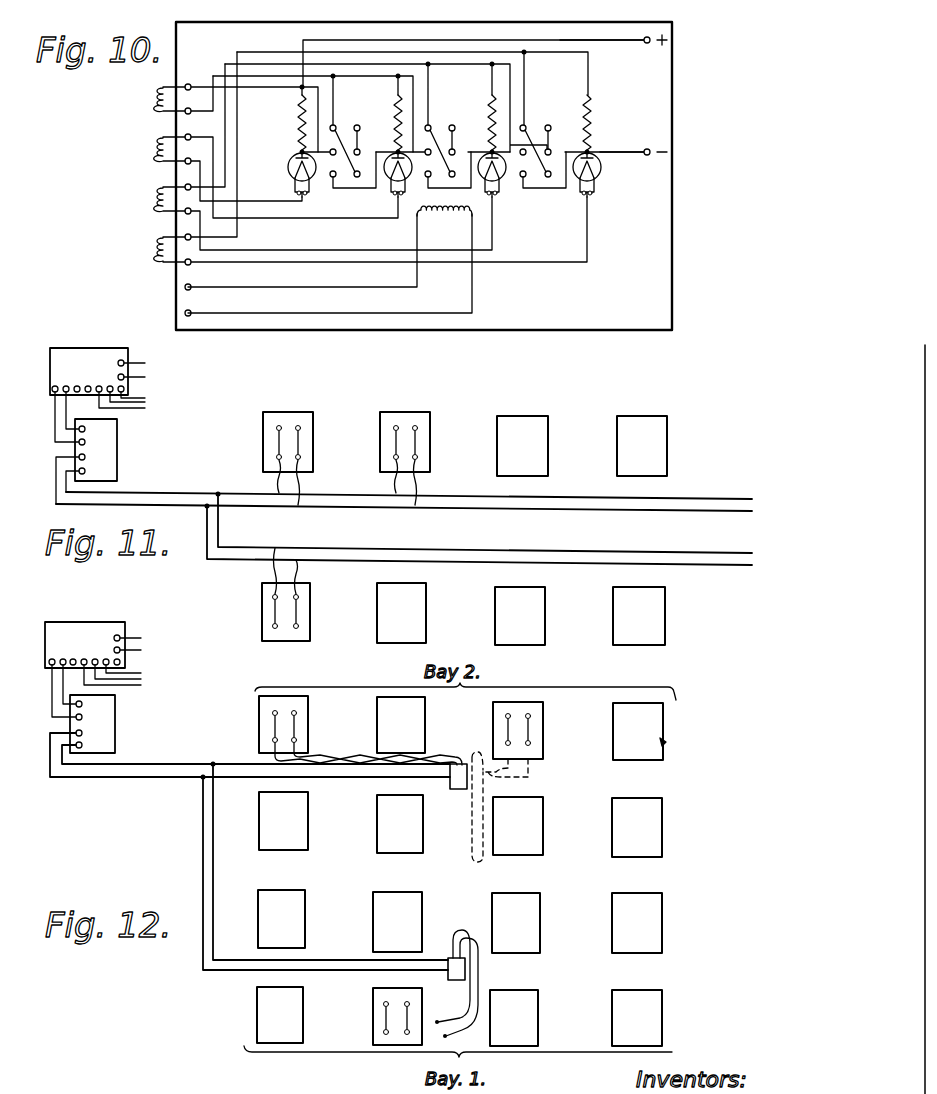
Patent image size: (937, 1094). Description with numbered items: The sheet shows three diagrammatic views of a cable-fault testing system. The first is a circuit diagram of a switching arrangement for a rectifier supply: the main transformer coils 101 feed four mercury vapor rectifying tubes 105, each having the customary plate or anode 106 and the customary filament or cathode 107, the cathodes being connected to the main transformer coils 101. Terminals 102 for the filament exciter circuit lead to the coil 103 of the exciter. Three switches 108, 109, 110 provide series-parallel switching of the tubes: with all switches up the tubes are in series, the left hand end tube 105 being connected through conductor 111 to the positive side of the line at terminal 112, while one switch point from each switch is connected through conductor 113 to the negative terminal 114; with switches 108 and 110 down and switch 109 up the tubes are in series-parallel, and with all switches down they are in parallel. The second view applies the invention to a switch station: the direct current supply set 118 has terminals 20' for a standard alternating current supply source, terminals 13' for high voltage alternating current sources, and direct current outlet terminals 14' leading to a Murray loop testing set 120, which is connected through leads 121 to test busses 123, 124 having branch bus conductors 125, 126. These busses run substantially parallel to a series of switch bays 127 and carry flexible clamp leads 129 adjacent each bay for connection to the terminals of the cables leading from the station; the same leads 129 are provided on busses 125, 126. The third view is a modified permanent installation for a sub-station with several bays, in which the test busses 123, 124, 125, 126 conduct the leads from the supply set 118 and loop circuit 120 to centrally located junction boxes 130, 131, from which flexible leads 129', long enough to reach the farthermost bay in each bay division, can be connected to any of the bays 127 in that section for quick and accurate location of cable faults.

In FIG. 10, the main transformer coils 101 is at (150, 235).
In FIG. 10, the terminals for the filament exciter circuit 102 is at (183, 312).
In FIG. 10, the coil of the exciter 103 is at (455, 213).
In FIG. 10, the mercury vapor rectifying tubes 105 is at (291, 167).
In FIG. 10, the plate or anode 106 is at (299, 148).
In FIG. 10, the filament or cathode 107 is at (296, 176).
In FIG. 10, the switch 108 is at (350, 124).
In FIG. 10, the switch 109 is at (443, 124).
In FIG. 10, the switch 110 is at (536, 124).
In FIG. 10, the conductor 111 is at (604, 42).
In FIG. 10, the positive terminal 112 is at (650, 44).
In FIG. 10, the conductor 113 is at (616, 152).
In FIG. 10, the negative terminal 114 is at (650, 150).
In FIG. 11, the direct current supply set 118 is at (57, 348).
In FIG. 12, the direct current supply set 118 is at (60, 622).
In FIG. 11, the terminals 13' is at (111, 366).
In FIG. 11, the terminals 20' is at (146, 358).
In FIG. 11, the direct current outlet terminals 14' is at (45, 402).
In FIG. 11, the Murray loop testing set 120 is at (112, 440).
In FIG. 12, the Murray loop testing set 120 is at (105, 714).
In FIG. 11, the leads 121 is at (66, 490).
In FIG. 11, the test bus 123 is at (168, 492).
In FIG. 12, the test bus 123 is at (165, 764).
In FIG. 11, the test bus 124 is at (165, 511).
In FIG. 12, the test bus 124 is at (147, 779).
In FIG. 11, the branch bus conductor 125 is at (244, 547).
In FIG. 12, the branch bus conductor 125 is at (216, 871).
In FIG. 11, the branch bus conductor 126 is at (241, 566).
In FIG. 12, the branch bus conductor 126 is at (203, 882).
In FIG. 11, the switch bays 127 is at (293, 418).
In FIG. 12, the switch bays 127 is at (262, 716).
In FIG. 11, the flexible leads 129 is at (373, 527).
In FIG. 12, the flexible leads 129' is at (410, 883).
In FIG. 12, the junction box 130 is at (458, 790).
In FIG. 12, the junction box 131 is at (452, 957).